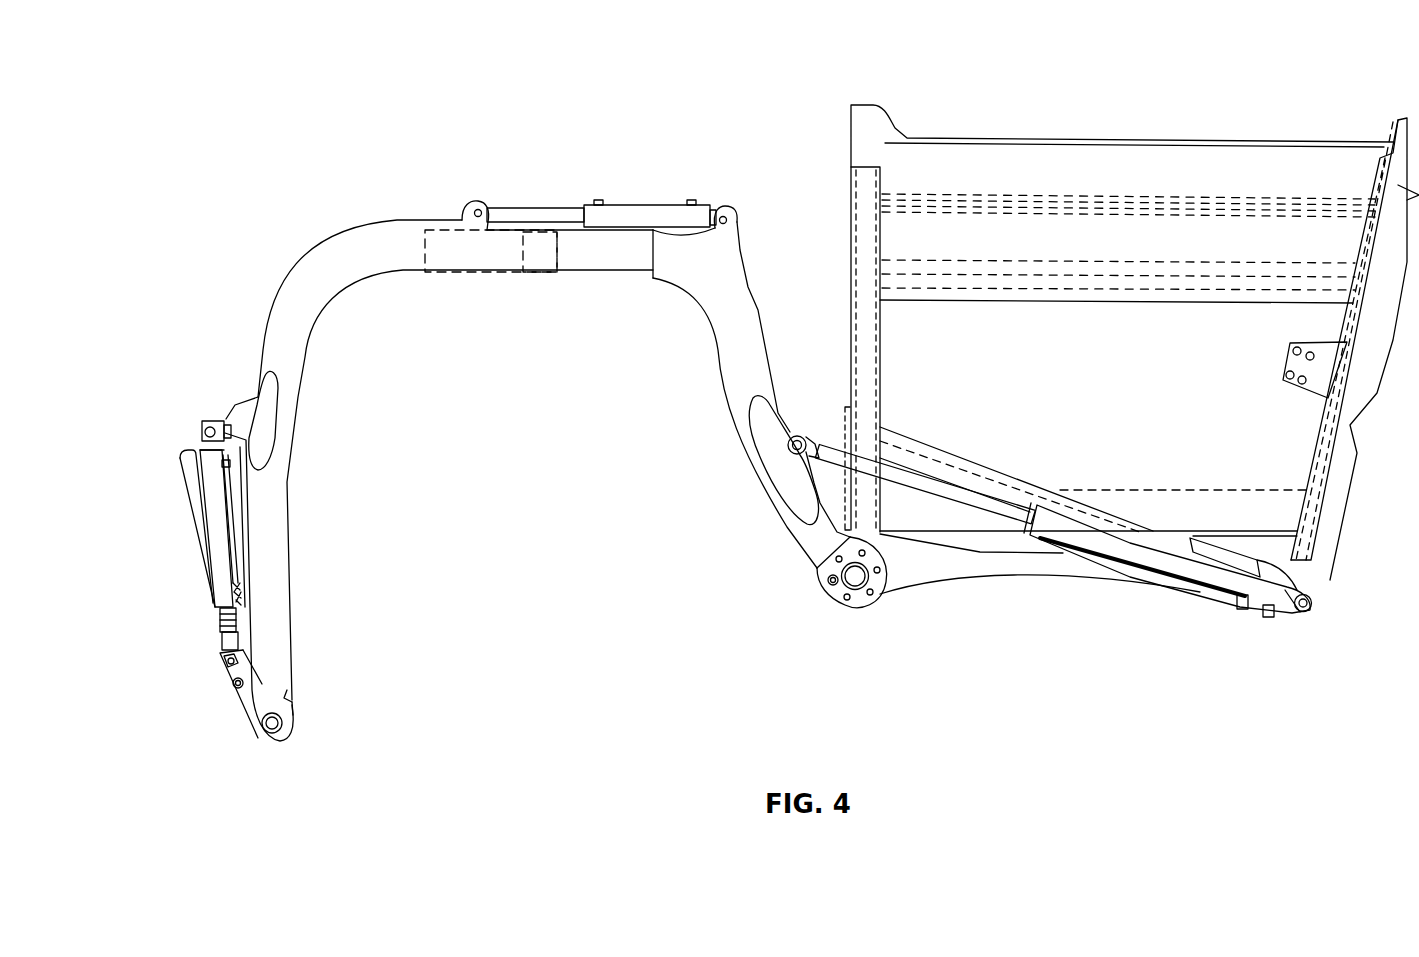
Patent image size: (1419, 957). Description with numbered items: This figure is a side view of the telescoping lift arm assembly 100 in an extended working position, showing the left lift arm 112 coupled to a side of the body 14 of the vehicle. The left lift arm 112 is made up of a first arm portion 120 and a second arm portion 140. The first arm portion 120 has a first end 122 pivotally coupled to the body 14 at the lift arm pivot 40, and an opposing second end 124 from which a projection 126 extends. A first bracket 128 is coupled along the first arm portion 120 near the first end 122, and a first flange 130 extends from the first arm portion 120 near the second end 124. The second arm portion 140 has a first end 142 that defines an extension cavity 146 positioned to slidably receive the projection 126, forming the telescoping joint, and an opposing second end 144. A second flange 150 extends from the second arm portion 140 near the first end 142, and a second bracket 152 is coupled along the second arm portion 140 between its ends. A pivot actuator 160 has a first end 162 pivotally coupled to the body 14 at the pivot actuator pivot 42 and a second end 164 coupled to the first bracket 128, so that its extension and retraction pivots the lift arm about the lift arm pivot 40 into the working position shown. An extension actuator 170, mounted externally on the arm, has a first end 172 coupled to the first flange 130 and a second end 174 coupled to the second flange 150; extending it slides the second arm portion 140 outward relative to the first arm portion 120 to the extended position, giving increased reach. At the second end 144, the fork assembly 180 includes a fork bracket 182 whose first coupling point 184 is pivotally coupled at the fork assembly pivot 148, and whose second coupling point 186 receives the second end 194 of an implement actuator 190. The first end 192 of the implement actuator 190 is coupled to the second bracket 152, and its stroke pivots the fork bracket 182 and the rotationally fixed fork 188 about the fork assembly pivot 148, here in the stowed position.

The telescoping lift arm assembly 100 is at (320, 198).
The second arm portion 140 is at (340, 288).
The first arm portion 120 is at (748, 385).
The left lift arm 112 is at (485, 293).
The projection 126 is at (615, 258).
The second end 124 is at (655, 283).
The first end 142 is at (527, 282).
The extension cavity 146 is at (425, 245).
The second flange 150 is at (466, 213).
The extension actuator 170 is at (597, 182).
The second end 174 is at (492, 207).
The first end 172 is at (718, 208).
The first flange 130 is at (725, 236).
The first bracket 128 is at (775, 458).
The second end 164 is at (815, 430).
The first end 122 is at (843, 613).
The lift arm pivot 40 is at (878, 589).
The body 14 is at (848, 277).
The pivot actuator 160 is at (1088, 533).
The first end 162 is at (1300, 613).
The pivot actuator pivot 42 is at (1320, 592).
The second bracket 152 is at (235, 410).
The first end 192 is at (236, 450).
The fork 188 is at (188, 475).
The implement actuator 190 is at (224, 543).
The fork assembly 180 is at (197, 562).
The second end 194 is at (217, 636).
The second coupling point 186 is at (252, 660).
The fork bracket 182 is at (237, 703).
The first coupling point 184 is at (286, 697).
The second end 144 is at (296, 725).
The fork assembly pivot 148 is at (272, 728).